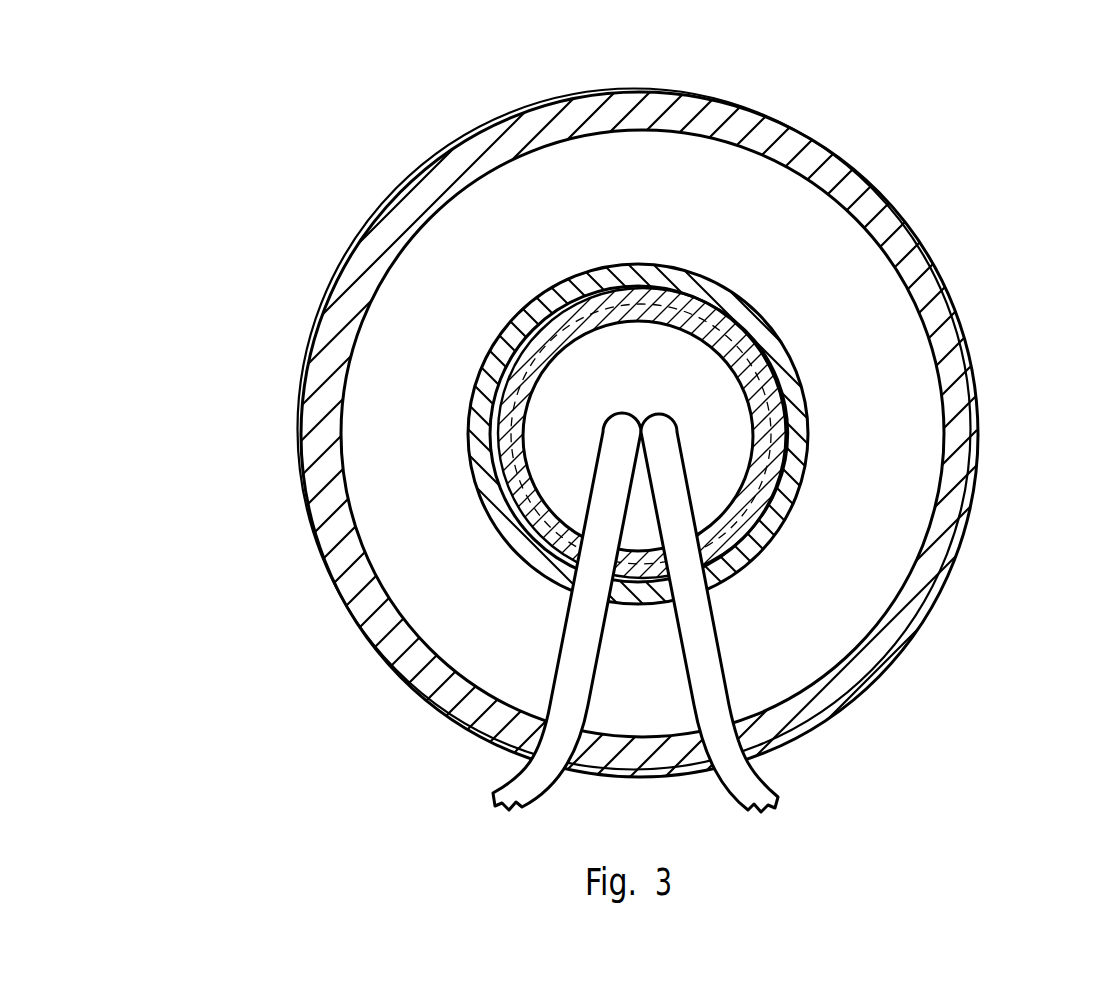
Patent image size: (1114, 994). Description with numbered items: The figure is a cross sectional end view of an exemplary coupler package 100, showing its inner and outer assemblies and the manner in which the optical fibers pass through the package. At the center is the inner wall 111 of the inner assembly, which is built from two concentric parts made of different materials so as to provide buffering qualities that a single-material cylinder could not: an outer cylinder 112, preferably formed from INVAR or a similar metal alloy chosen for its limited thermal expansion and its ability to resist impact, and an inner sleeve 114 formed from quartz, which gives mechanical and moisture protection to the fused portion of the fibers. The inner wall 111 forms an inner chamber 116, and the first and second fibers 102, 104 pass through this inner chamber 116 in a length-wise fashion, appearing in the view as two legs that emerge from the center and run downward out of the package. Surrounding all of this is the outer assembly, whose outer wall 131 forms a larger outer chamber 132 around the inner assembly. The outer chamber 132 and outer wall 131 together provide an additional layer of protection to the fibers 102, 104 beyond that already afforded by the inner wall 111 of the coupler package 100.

The coupler package 100 is at (618, 419).
The outer wall 131 is at (387, 203).
The outer chamber 132 is at (405, 408).
The inner wall 111 is at (781, 418).
The outer cylinder 112 is at (788, 372).
The inner sleeve 114 is at (788, 447).
The inner chamber 116 is at (712, 487).
The first fiber 102 is at (567, 663).
The second fiber 104 is at (708, 682).